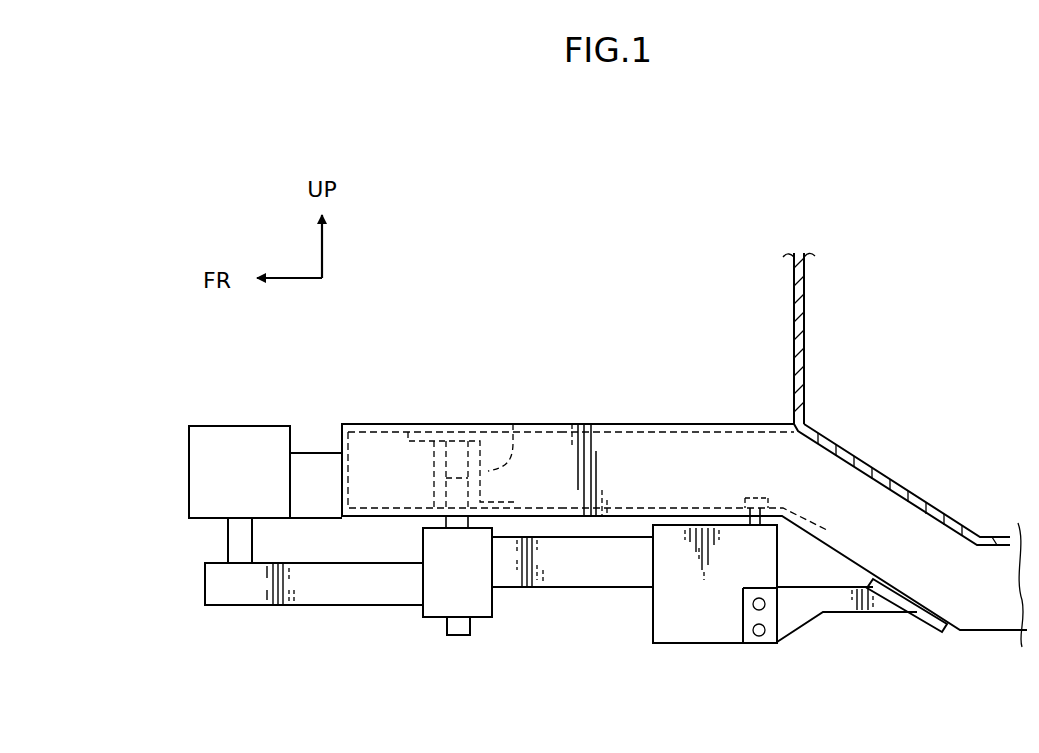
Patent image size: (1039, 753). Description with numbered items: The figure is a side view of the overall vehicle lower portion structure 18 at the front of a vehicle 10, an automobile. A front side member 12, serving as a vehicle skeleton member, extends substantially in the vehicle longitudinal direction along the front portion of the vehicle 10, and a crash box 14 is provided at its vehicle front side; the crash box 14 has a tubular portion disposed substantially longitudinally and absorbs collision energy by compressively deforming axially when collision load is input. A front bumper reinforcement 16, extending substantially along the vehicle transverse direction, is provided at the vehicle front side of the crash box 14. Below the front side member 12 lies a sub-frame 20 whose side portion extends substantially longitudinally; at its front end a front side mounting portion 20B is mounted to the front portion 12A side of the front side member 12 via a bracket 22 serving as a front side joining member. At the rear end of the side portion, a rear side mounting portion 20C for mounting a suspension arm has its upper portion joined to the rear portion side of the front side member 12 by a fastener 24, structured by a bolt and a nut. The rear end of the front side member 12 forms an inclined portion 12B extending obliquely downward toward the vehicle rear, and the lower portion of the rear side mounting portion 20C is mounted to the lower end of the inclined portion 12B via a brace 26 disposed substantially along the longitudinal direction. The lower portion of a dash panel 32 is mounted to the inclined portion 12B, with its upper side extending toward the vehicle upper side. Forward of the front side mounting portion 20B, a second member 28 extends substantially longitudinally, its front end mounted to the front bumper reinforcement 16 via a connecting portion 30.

The vehicle 10 is at (543, 336).
The front side member 12 is at (618, 418).
The front portion 12A is at (397, 458).
The inclined portion 12B is at (885, 515).
The crash box 14 is at (316, 465).
The front bumper reinforcement 16 is at (240, 436).
The vehicle lower portion structure 18 is at (486, 403).
The sub-frame 20 is at (570, 594).
The front side mounting portion 20B is at (437, 608).
The rear side mounting portion 20C is at (707, 643).
The bracket 22 is at (513, 424).
The fastener 24 is at (760, 495).
The brace 26 is at (850, 612).
The second member 28 is at (315, 604).
The connecting portion 30 is at (235, 543).
The dash panel 32 is at (805, 313).